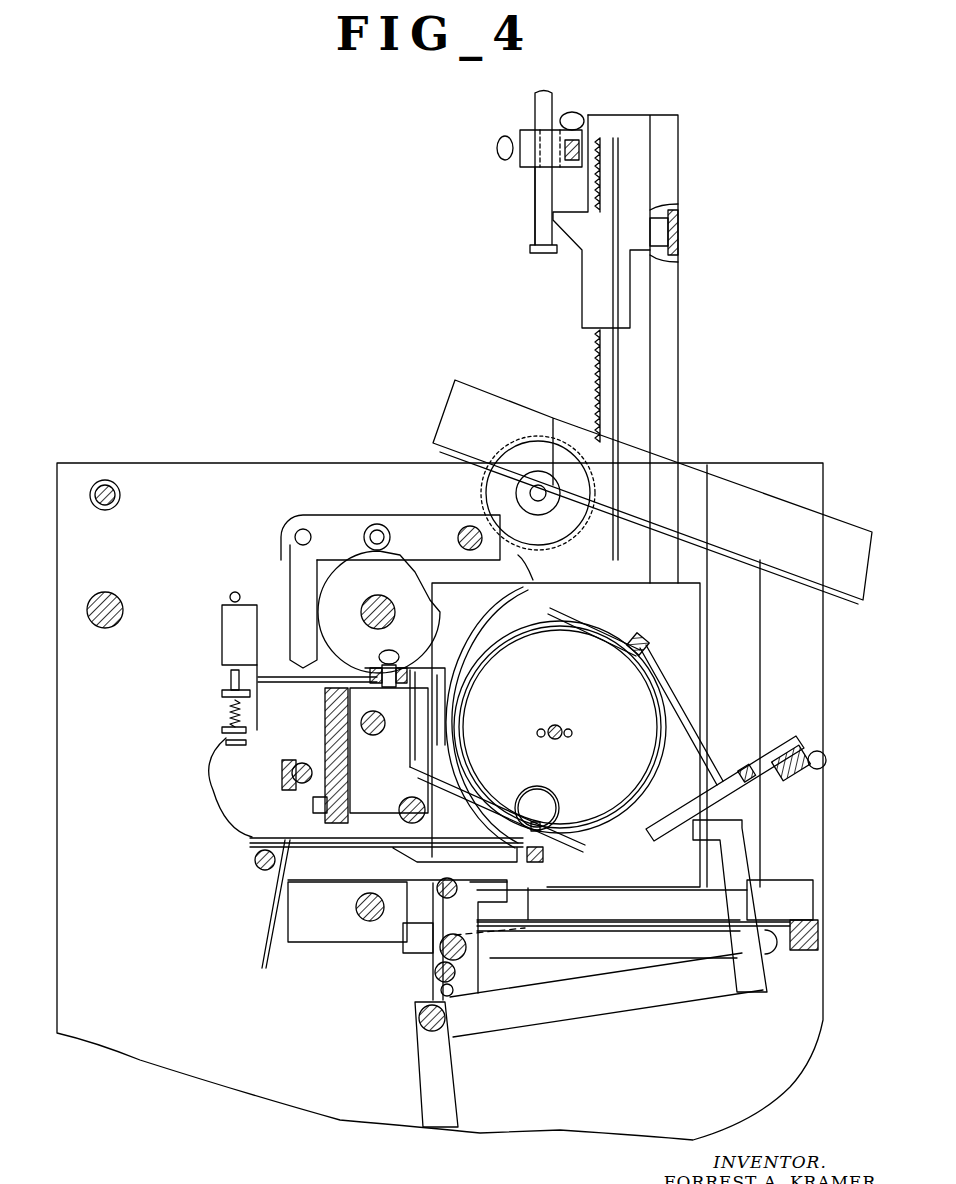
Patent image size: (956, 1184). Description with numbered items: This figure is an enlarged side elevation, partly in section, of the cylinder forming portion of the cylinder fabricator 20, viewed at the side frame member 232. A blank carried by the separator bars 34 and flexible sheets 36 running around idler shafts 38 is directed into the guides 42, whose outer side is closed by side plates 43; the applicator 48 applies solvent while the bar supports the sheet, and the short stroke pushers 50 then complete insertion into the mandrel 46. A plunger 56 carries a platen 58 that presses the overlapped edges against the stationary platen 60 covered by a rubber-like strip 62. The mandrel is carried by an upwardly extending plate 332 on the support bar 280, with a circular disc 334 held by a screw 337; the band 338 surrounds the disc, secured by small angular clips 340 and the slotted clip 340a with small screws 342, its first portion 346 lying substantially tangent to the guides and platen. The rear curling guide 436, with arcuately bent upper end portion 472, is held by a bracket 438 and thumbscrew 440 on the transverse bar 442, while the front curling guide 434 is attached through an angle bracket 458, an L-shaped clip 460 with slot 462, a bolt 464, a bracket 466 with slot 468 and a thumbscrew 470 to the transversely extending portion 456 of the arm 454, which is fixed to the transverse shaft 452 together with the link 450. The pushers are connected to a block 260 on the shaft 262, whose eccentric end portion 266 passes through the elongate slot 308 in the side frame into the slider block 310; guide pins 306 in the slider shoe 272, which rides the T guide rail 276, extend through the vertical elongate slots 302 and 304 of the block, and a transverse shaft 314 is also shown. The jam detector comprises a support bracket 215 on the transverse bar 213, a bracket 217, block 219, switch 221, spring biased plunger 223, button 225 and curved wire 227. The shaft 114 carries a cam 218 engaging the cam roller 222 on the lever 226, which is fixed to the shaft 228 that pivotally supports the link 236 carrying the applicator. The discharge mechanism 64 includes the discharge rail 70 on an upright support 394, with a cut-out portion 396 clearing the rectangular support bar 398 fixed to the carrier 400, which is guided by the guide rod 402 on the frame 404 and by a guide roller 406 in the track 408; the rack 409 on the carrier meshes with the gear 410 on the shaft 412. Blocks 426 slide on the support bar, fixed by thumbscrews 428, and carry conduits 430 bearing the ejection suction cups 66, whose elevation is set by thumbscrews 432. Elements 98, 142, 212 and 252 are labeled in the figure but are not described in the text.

The cylinder fabricator 20 is at (226, 276).
The side frame member 232 is at (181, 471).
The mounting hole 142 is at (117, 502).
The shaft 98 is at (116, 600).
The frame 404 is at (680, 150).
The vertically reciprocable carrier 400 is at (580, 318).
The guide rod 402 is at (602, 343).
The cut-out portion 396 is at (565, 415).
The rack 409 is at (595, 368).
The discharge mechanism 64 is at (636, 272).
The guide roller 406 is at (680, 225).
The track 408 is at (680, 256).
The ejection suction cups 66 is at (538, 255).
The blocks 426 is at (520, 128).
The thumbscrews 432 is at (497, 148).
The conduit 430 is at (536, 180).
The thumbscrews 428 is at (574, 112).
The rectangular support bar 398 is at (580, 140).
The discharge rail 70 is at (680, 482).
The upright support 394 is at (735, 565).
The gear 410 is at (572, 462).
The shaft 412 is at (538, 487).
The lever 226 is at (343, 519).
The link 236 is at (290, 567).
The shaft 228 is at (378, 524).
The cam roller 222 is at (445, 506).
The shaft 114 is at (388, 598).
The bracket 217 is at (220, 636).
The switch 221 is at (226, 656).
The block 219 is at (222, 693).
The spring biased plunger 223 is at (230, 712).
The button 225 is at (226, 738).
The curved wire 227 is at (213, 770).
The bracket assembly 212 is at (210, 784).
The support bracket 215 is at (300, 676).
The thumbscrew 440 is at (396, 708).
The stop 252 is at (290, 757).
The applicator 48 is at (280, 782).
The cam 218 is at (418, 580).
The transverse bar 213 is at (348, 782).
The arcuately bent upper end portion 472 is at (500, 620).
The separator bars 34 is at (246, 835).
The idler shafts 38 is at (252, 857).
The guides 42 is at (330, 832).
The flexible sheets 36 is at (262, 955).
The short stroke pushers 50 is at (272, 870).
The upwardly extending plates 332 is at (566, 735).
The circular disc 334 is at (560, 727).
The screw 337 is at (575, 730).
The platen 58 is at (528, 816).
The plunger 56 is at (537, 788).
The side plates 43 is at (515, 820).
The rear curling guides 436 is at (515, 616).
The transverse bar 442 is at (434, 652).
The front curling guides 434 is at (578, 622).
The bracket 438 is at (458, 682).
The small angular clips 340 is at (640, 636).
The small screws 342 is at (645, 660).
The clip 340a is at (660, 776).
The band 338 is at (540, 625).
The strip of rubber-like material 62 is at (563, 828).
The stationary platen 60 is at (555, 862).
The first portion of the band 346 is at (560, 848).
The bracket 466 is at (667, 881).
The cylinder forming mandrel 46 is at (658, 665).
The angle bracket 458 is at (682, 718).
The L-shaped clip 460 is at (720, 778).
The bolt 464 is at (765, 752).
The thumbscrew 470 is at (818, 780).
The slot 462 is at (812, 748).
The transversely extending portion 456 is at (843, 743).
The slot 468 is at (785, 900).
The support bar 280 is at (795, 893).
The transverse shaft 314 is at (360, 910).
The vertical elongate slot 302 is at (445, 898).
The guide pins 306 is at (438, 890).
The slider block 310 is at (404, 946).
The shaft 262 is at (440, 958).
The block 260 is at (440, 990).
The vertical elongate slot 304 is at (455, 998).
The transverse shaft 452 is at (422, 1022).
The link 450 is at (455, 1088).
The arm 454 is at (598, 1020).
The elongate slot 308 is at (680, 963).
The slider shoe 272 is at (525, 915).
The eccentric end portion 266 is at (530, 938).
The T guide rail 276 is at (685, 932).